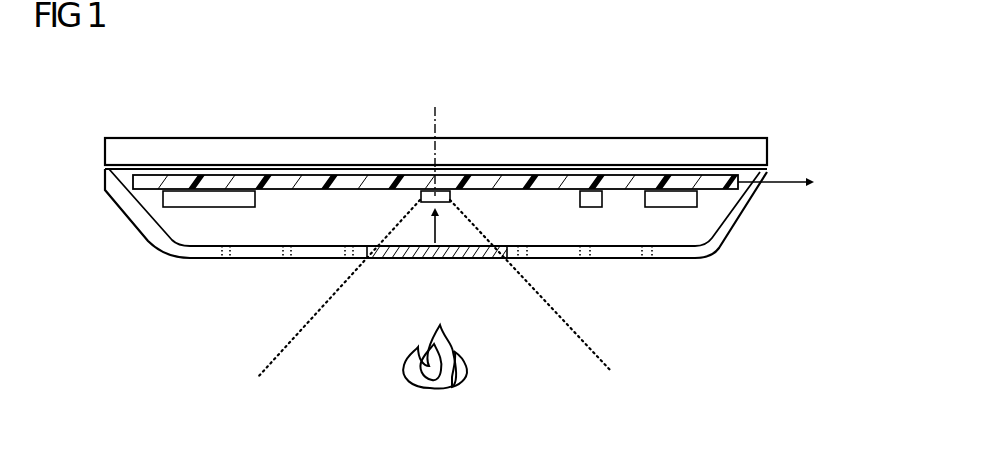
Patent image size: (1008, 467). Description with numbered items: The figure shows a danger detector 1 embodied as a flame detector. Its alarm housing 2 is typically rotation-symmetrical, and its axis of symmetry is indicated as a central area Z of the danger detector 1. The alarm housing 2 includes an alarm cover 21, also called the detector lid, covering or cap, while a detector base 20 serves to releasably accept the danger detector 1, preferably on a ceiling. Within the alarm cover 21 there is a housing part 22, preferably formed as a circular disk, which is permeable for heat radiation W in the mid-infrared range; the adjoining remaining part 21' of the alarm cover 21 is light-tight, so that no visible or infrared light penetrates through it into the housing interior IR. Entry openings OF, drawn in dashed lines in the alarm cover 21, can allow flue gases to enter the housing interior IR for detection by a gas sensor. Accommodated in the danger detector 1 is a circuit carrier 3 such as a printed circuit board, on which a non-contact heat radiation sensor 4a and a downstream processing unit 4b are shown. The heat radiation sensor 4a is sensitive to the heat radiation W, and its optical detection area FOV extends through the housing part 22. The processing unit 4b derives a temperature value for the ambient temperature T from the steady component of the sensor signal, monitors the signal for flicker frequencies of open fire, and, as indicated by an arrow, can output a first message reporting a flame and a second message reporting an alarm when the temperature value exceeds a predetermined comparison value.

The danger detector 1 is at (416, 179).
The alarm housing 2 is at (444, 215).
The detector base 20 is at (260, 141).
The alarm cover 21 is at (464, 222).
The remaining part of the alarm cover 21' is at (701, 279).
The housing part 22 is at (487, 262).
The circuit carrier 3 is at (715, 185).
The heat radiation sensor 4a is at (452, 196).
The processing unit 4b is at (245, 200).
The housing interior IR is at (636, 232).
The central area Z is at (440, 138).
The heat radiation W is at (430, 233).
The ambient temperature T is at (484, 244).
The optical detection area FOV is at (641, 322).
The entry openings OF is at (222, 260).